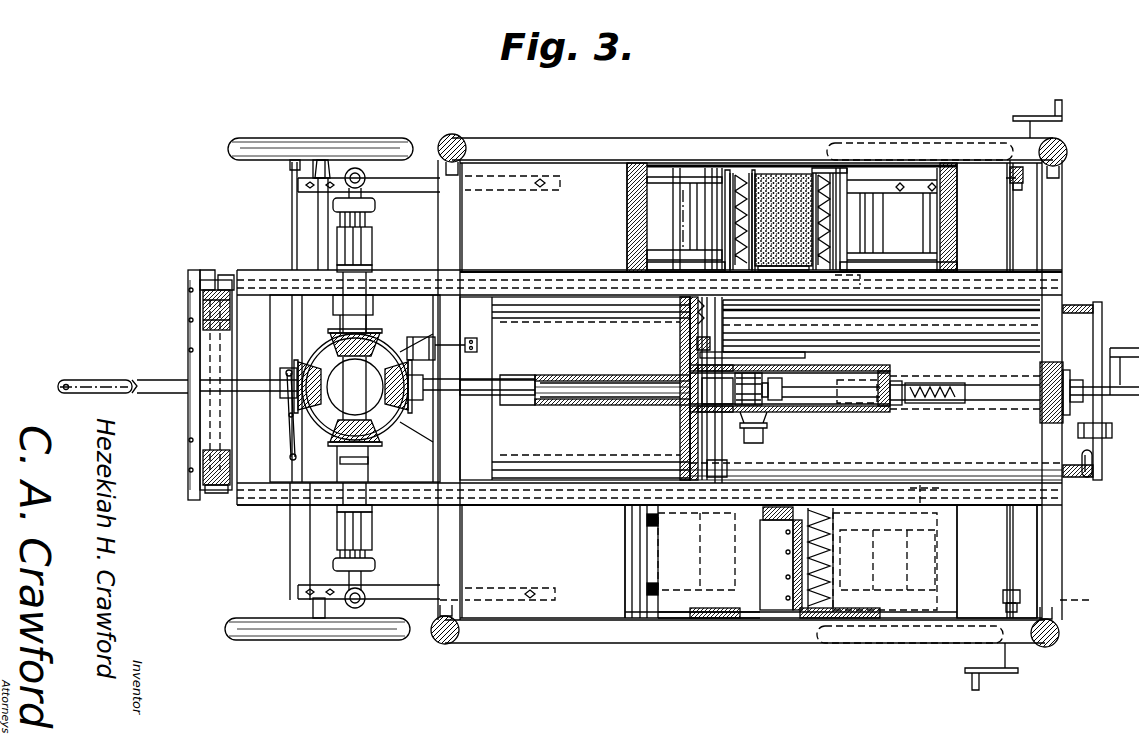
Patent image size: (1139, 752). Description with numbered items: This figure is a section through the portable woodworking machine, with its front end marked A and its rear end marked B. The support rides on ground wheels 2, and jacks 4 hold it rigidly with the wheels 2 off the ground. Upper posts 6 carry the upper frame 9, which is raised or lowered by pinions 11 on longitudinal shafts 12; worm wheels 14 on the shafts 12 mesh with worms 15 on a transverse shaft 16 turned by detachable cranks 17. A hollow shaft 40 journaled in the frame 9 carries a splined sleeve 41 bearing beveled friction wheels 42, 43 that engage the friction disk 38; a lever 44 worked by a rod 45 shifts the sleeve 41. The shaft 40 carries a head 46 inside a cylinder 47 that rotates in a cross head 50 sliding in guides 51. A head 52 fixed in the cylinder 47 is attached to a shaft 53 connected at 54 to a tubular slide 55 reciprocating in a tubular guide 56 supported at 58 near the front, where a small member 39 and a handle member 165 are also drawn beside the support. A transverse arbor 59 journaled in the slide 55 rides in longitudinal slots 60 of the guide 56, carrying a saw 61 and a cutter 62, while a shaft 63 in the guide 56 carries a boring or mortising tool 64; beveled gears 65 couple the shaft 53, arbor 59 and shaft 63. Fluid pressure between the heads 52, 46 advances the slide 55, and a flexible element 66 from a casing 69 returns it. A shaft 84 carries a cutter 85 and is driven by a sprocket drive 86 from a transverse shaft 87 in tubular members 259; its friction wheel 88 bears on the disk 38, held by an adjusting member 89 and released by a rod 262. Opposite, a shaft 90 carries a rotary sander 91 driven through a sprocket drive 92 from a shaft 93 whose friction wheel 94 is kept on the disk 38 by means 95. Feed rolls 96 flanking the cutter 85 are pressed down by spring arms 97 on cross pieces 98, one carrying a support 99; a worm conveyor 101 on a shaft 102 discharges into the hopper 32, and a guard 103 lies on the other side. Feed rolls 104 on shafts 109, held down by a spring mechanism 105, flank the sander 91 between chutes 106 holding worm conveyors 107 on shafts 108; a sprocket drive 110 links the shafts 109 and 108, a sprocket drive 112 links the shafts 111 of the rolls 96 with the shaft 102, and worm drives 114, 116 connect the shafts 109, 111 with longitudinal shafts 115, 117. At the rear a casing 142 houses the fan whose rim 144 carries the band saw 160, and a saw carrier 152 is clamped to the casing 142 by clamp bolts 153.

The ground wheels 2 is at (242, 140).
The jacks 4 is at (158, 554).
The upper posts 6 is at (452, 134).
The upper frame 9 is at (543, 140).
The pinions 11 is at (465, 582).
The shafts 12 is at (608, 170).
The worm wheels 14 is at (1010, 178).
The worms 15 is at (1030, 178).
The transverse shaft 16 is at (1012, 250).
The detachable cranks 17 is at (1030, 112).
The hopper 32 is at (986, 318).
The friction disk 38 is at (320, 356).
The bracket 39 is at (1110, 438).
The hollow shaft 40 is at (420, 376).
The sleeve 41 is at (355, 387).
The beveled friction wheel 42 is at (412, 400).
The beveled friction wheel 43 is at (290, 376).
The lever 44 is at (288, 448).
The rod 45 is at (320, 500).
The head 46 is at (622, 404).
The cylinder 47 is at (530, 395).
The cross head 50 is at (490, 358).
The guides 51 is at (640, 306).
The head 52 is at (695, 410).
The shaft 53 is at (722, 350).
The connection 54 is at (700, 384).
The tubular slide 55 is at (882, 366).
The tubular guide 56 is at (1008, 375).
The support 58 is at (1062, 350).
The transverse arbor 59 is at (775, 414).
The longitudinal slots 60 is at (838, 371).
The saw 61 is at (790, 354).
The cutter 62 is at (764, 432).
The shaft 63 is at (832, 398).
The boring or mortising tool 64 is at (935, 395).
The beveled gears 65 is at (831, 383).
The flexible element 66 is at (475, 340).
The casing 69 is at (408, 342).
The cutter shaft 84 is at (790, 640).
The cutter 85 is at (760, 556).
The sprocket drive 86 is at (540, 510).
The transverse shaft 87 is at (330, 480).
The friction wheel 88 is at (360, 425).
The adjusting member 89 is at (376, 562).
The sander shaft 90 is at (800, 165).
The rotary sander 91 is at (775, 170).
The sprocket drive 92 is at (540, 280).
The shaft 93 is at (352, 303).
The friction wheel 94 is at (370, 320).
The engaging means 95 is at (356, 170).
The feed rolls 96 is at (706, 566).
The spring arms 97 is at (632, 522).
The cross pieces 98 is at (622, 556).
The support 99 is at (950, 562).
The worm conveyor 101 is at (876, 484).
The shaft 102 is at (876, 487).
The guard 103 is at (660, 622).
The feed rolls 104 is at (680, 206).
The spring mechanism 105 is at (658, 185).
The chutes 106 is at (725, 165).
The worm conveyors 107 is at (720, 240).
The worm conveyor shafts 108 is at (740, 165).
The feed roll shafts 109 is at (690, 264).
The sprocket drive 110 is at (815, 165).
The feed roll shafts 111 is at (680, 536).
The sprocket drive 112 is at (745, 620).
The worm drive 114 is at (688, 330).
The longitudinal shaft 115 is at (568, 314).
The worm drive 116 is at (756, 432).
The longitudinal shaft 117 is at (632, 472).
The casing 142 is at (208, 452).
The rim 144 is at (200, 324).
The saw carrier 152 is at (215, 270).
The clamp bolts 153 is at (250, 272).
The band saw 160 is at (220, 492).
The crank 165 is at (1104, 340).
The tubular members 259 is at (360, 560).
The rod 262 is at (353, 608).
The front end A is at (1074, 194).
The rear end B is at (180, 306).